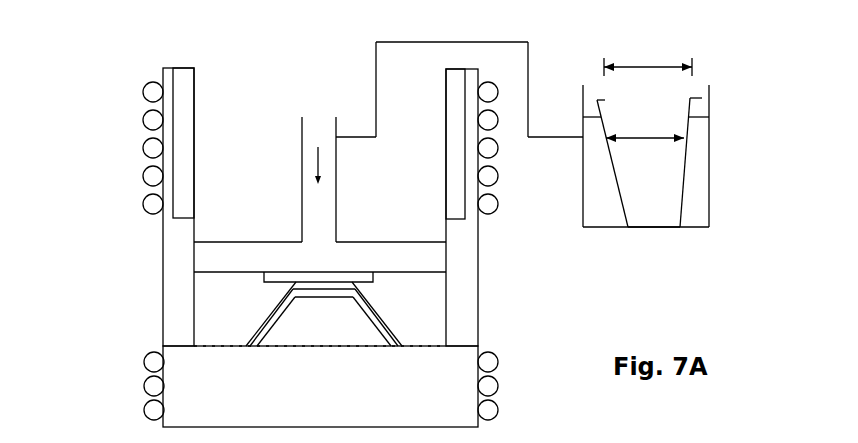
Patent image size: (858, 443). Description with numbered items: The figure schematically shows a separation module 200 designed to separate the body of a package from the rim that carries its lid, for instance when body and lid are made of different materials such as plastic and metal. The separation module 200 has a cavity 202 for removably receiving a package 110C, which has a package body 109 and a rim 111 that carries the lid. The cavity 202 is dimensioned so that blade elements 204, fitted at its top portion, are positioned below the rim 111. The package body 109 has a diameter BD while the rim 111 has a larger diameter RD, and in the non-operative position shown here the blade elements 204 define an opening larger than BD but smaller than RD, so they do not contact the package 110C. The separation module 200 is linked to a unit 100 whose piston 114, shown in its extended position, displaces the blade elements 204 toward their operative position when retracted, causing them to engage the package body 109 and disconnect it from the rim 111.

The unit 100 is at (120, 90).
The piston 114 is at (312, 134).
The separation module 200 is at (765, 72).
The cavity 202 is at (713, 216).
The blade elements 204 is at (709, 118).
The rim 111 is at (603, 100).
The package 110C is at (605, 170).
The package body 109 is at (621, 200).